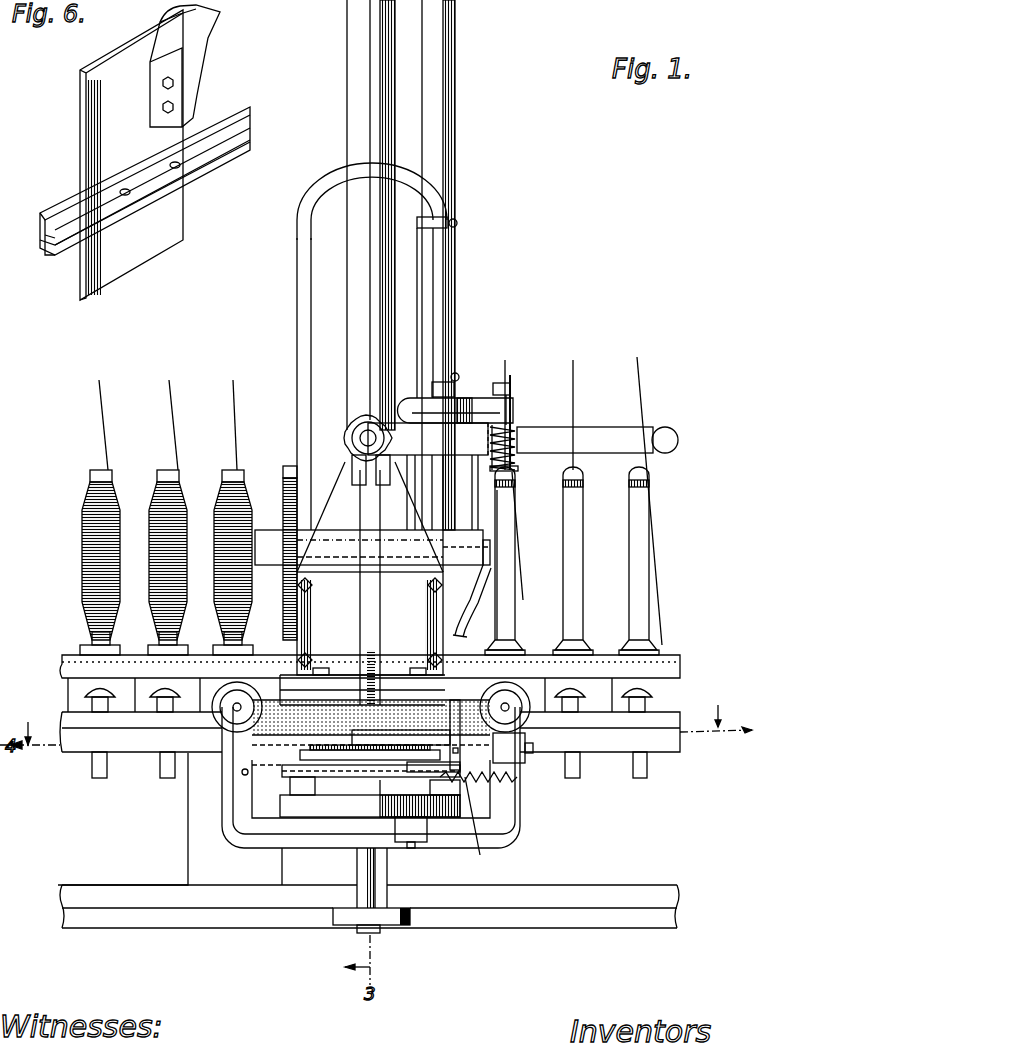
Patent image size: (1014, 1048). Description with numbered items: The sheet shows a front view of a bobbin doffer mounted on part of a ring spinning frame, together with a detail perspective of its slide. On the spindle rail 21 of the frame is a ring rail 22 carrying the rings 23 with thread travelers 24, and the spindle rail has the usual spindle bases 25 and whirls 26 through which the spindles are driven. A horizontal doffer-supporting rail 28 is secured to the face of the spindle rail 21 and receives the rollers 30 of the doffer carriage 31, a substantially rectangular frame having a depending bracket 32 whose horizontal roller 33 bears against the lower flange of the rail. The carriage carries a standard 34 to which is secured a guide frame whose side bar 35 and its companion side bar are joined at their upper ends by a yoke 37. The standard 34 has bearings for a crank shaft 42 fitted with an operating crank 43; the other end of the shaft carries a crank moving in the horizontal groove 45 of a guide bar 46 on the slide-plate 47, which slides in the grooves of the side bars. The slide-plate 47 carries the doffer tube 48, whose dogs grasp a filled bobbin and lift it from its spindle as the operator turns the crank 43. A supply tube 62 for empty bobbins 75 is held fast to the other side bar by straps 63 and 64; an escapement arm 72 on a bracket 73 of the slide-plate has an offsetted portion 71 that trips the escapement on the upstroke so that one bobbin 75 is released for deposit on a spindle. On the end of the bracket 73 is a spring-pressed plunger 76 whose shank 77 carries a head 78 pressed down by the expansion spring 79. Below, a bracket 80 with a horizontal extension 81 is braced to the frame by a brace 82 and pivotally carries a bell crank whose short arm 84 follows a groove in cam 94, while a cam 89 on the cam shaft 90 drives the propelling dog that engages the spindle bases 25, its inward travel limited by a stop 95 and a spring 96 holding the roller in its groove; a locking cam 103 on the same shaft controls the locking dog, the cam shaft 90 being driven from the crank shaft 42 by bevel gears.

In FIG. 1, the spindle rail 21 is at (205, 858).
In FIG. 1, the ring rail 22 is at (63, 668).
In FIG. 1, the rings 23 is at (90, 645).
In FIG. 1, the thread travelers 24 is at (118, 648).
In FIG. 1, the spindle bases 25 is at (107, 770).
In FIG. 1, the whirls 26 is at (92, 697).
In FIG. 1, the doffer-supporting rail 28 is at (716, 716).
In FIG. 1, the rollers 30 is at (238, 690).
In FIG. 1, the doffer carriage 31 is at (517, 842).
In FIG. 1, the depending bracket 32 is at (388, 880).
In FIG. 1, the horizontal roller 33 is at (406, 910).
In FIG. 1, the standard 34 is at (389, 587).
In FIG. 1, the side bar 35 is at (297, 331).
In FIG. 1, the yoke 37 is at (335, 171).
In FIG. 1, the crank shaft 42 is at (345, 425).
In FIG. 1, the operating crank 43 is at (608, 430).
In FIG. 6, the horizontal groove 45 is at (250, 130).
In FIG. 1, the horizontal groove 45 is at (490, 548).
In FIG. 6, the guide bar 46 is at (238, 110).
In FIG. 1, the guide bar 46 is at (273, 530).
In FIG. 6, the slide-plate 47 is at (131, 155).
In FIG. 1, the slide-plate 47 is at (328, 443).
In FIG. 1, the doffer tube 48 is at (352, 42).
In FIG. 1, the supply tube 62 is at (450, 197).
In FIG. 1, the strap 63 is at (456, 222).
In FIG. 1, the strap 64 is at (459, 374).
In FIG. 1, the offsetted portion 71 is at (465, 623).
In FIG. 1, the escapement arm 72 is at (493, 496).
In FIG. 6, the bracket 73 is at (190, 40).
In FIG. 1, the bracket 73 is at (466, 399).
In FIG. 1, the bobbins 75 is at (166, 470).
In FIG. 1, the spring-pressed plunger 76 is at (509, 384).
In FIG. 1, the shank 77 is at (505, 433).
In FIG. 1, the head 78 is at (519, 469).
In FIG. 1, the expansion spring 79 is at (513, 441).
In FIG. 1, the bracket 80 is at (442, 736).
In FIG. 1, the horizontal extension 81 is at (468, 780).
In FIG. 1, the brace 82 is at (523, 762).
In FIG. 1, the short arm 84 is at (393, 782).
In FIG. 1, the cam 89 is at (371, 782).
In FIG. 1, the cam shaft 90 is at (366, 656).
In FIG. 1, the cam 94 is at (370, 805).
In FIG. 1, the stop 95 is at (250, 772).
In FIG. 1, the spring 96 is at (500, 790).
In FIG. 1, the locking cam 103 is at (395, 750).